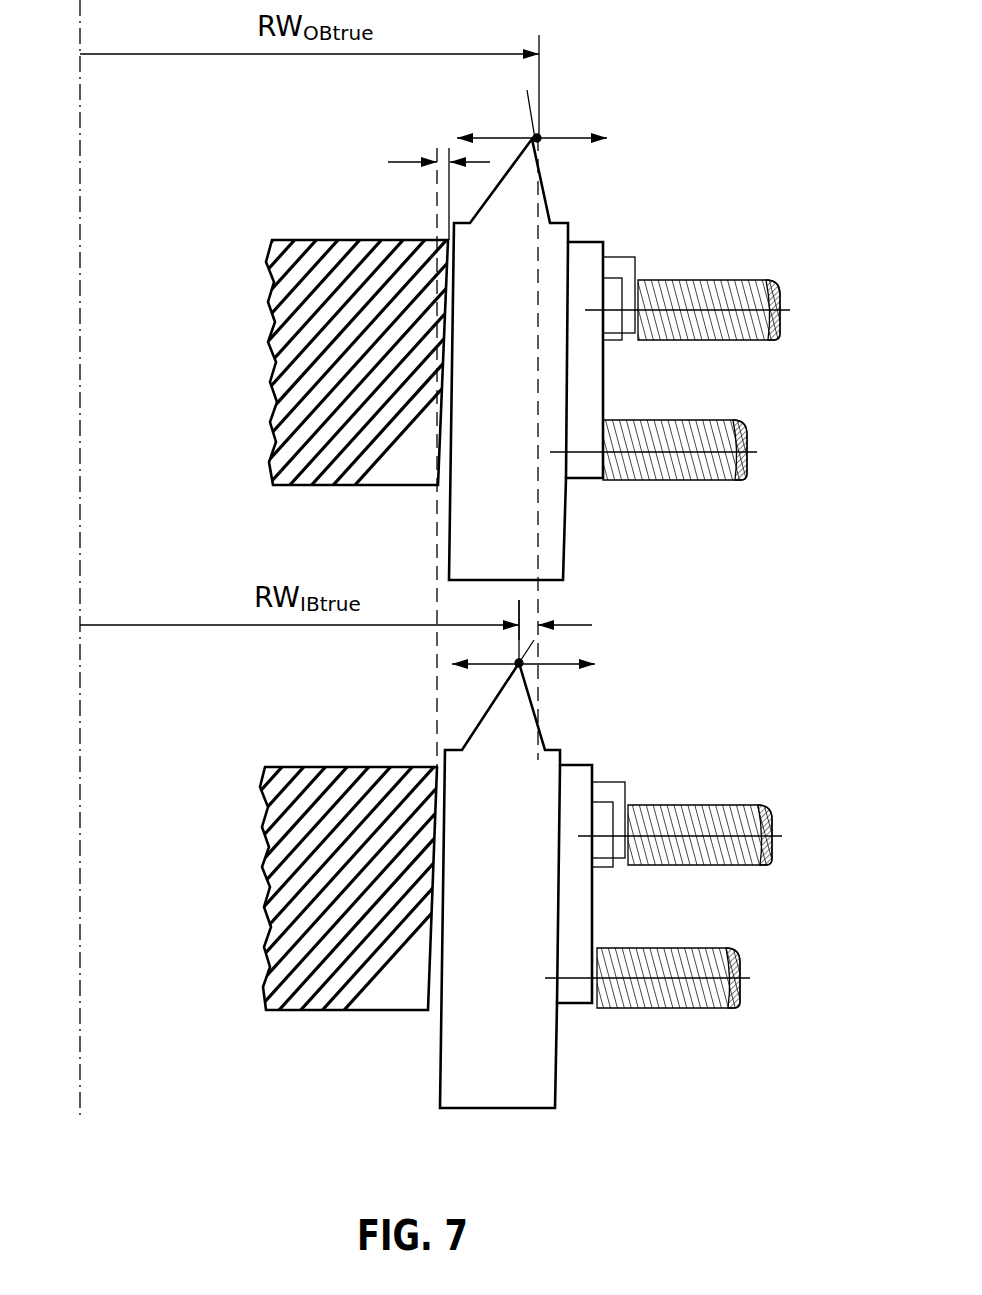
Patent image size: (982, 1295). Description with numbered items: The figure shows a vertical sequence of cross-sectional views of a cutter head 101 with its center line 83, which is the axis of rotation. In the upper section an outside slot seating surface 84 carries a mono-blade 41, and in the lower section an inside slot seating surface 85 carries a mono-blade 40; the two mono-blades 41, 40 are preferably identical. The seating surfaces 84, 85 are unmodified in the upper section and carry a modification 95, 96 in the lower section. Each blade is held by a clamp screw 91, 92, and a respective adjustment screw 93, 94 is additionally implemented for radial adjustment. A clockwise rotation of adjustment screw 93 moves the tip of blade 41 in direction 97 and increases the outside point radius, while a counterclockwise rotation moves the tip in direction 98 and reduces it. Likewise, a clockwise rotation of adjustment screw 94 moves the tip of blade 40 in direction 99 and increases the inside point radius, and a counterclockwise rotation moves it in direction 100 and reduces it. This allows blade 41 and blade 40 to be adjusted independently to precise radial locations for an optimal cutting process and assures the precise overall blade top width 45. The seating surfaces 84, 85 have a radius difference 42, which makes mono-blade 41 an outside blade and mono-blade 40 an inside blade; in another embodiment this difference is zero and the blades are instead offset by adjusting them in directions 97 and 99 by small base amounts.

The mono-blade 40 is at (540, 1075).
The mono-blade 41 is at (548, 530).
The radius difference 42 is at (442, 148).
The overall blade top width 45 is at (532, 610).
The center line 83 is at (82, 196).
The outside slot seating surface 84 is at (447, 265).
The inside slot seating surface 85 is at (432, 812).
The clamp screw 91 is at (708, 278).
The clamp screw 92 is at (700, 805).
The adjustment screw 93 is at (697, 422).
The adjustment screw 94 is at (698, 948).
The modification 95 is at (440, 423).
The modification 96 is at (417, 957).
The direction 97 is at (553, 134).
The direction 98 is at (530, 136).
The direction 99 is at (528, 666).
The direction 100 is at (512, 666).
The cutter head 101 is at (288, 355).